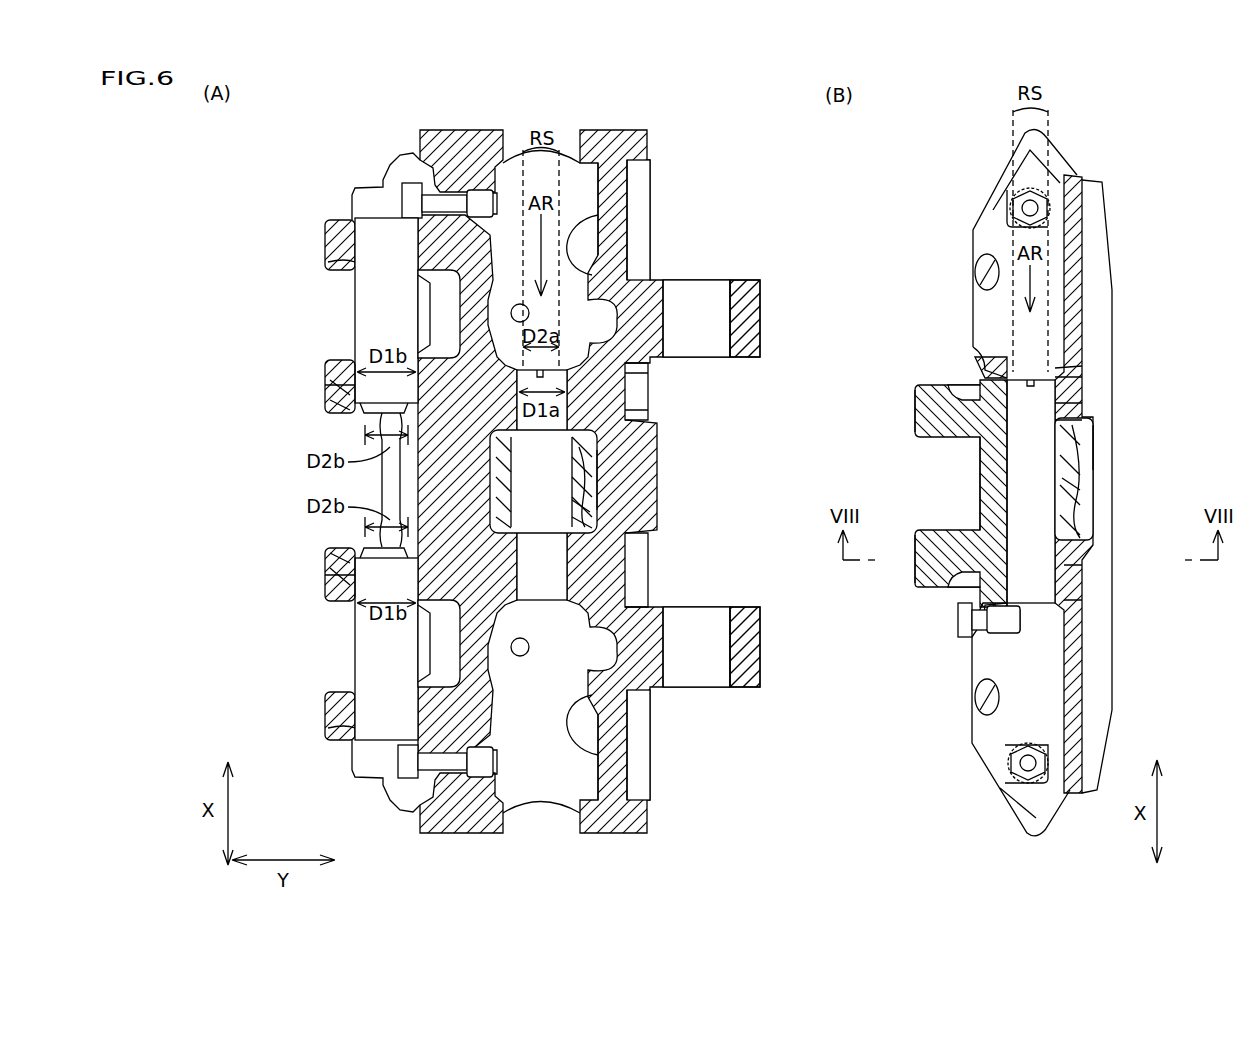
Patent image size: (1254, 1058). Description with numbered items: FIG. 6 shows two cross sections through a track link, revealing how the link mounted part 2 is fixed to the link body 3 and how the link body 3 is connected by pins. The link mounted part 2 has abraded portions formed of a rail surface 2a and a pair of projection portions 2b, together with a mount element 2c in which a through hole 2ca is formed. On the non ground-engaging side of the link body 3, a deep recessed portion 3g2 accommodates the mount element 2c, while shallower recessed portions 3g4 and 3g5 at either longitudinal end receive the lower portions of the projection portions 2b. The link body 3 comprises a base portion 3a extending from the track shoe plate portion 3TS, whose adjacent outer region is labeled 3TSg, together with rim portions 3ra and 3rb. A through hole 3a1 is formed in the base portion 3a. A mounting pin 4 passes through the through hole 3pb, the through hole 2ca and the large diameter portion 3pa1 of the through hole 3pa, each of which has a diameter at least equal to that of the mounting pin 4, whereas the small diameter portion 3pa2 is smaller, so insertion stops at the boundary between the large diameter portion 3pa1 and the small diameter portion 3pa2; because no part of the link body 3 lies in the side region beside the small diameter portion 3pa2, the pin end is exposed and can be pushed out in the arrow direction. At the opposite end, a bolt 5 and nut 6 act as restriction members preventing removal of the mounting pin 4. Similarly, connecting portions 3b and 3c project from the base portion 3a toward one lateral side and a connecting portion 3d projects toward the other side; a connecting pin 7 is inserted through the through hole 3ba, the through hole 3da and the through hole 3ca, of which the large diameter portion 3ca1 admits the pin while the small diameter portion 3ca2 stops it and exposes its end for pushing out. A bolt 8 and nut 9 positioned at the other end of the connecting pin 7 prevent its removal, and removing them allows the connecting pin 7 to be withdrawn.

The link mounted part 2 is at (955, 482).
The rail surface 2a is at (990, 493).
The projection portions 2b is at (940, 420).
The mount element 2c is at (577, 450).
The through hole 2ca is at (577, 512).
The link body 3 is at (1131, 262).
The base portion 3a is at (473, 287).
The through hole 3a1 is at (583, 228).
The connecting portion 3b is at (336, 242).
The through hole 3ba is at (340, 258).
The connecting portion 3c is at (340, 372).
The through hole 3ca is at (260, 372).
The large diameter portion 3ca1 is at (345, 388).
The small diameter portion 3ca2 is at (345, 406).
The connecting portion 3d is at (740, 297).
The through hole 3da is at (723, 300).
The recessed portion 3g2 is at (600, 488).
The recessed portion 3g4 is at (975, 590).
The recessed portion 3g5 is at (985, 378).
The through hole 3pa is at (738, 373).
The large diameter portion 3pa1 is at (595, 406).
The small diameter portion 3pa2 is at (595, 386).
The through hole 3pb is at (623, 572).
The rim portion 3ra is at (452, 172).
The rim portion 3rb is at (612, 180).
The track shoe plate portion 3TS is at (513, 163).
The side plate outer edge 3TSg is at (1093, 207).
The mounting pin 4 is at (540, 546).
The bolt 5 is at (965, 616).
The nut 6 is at (1010, 633).
The connecting pin 7 is at (382, 316).
The bolt 8 is at (410, 205).
The nut 9 is at (480, 200).